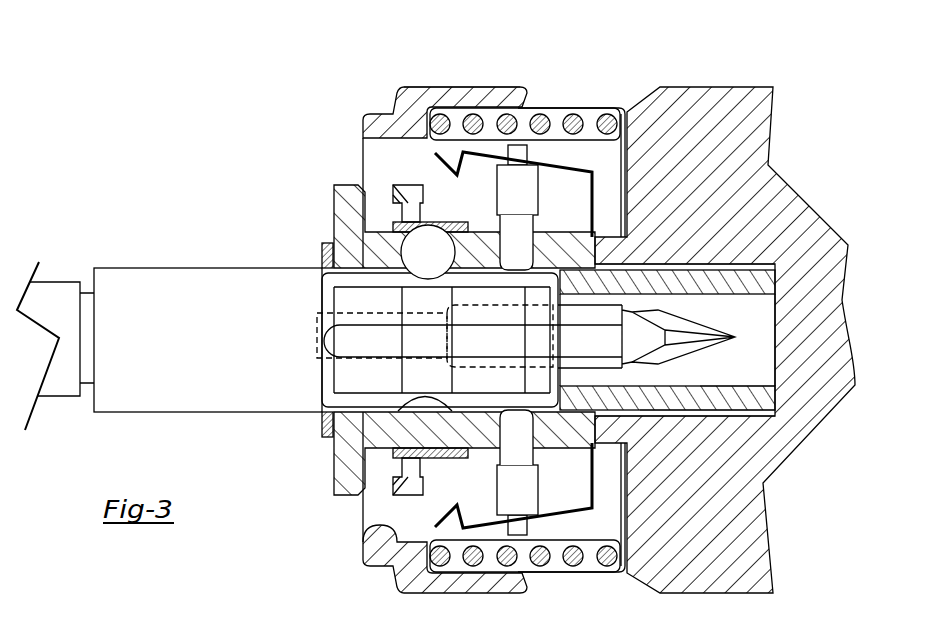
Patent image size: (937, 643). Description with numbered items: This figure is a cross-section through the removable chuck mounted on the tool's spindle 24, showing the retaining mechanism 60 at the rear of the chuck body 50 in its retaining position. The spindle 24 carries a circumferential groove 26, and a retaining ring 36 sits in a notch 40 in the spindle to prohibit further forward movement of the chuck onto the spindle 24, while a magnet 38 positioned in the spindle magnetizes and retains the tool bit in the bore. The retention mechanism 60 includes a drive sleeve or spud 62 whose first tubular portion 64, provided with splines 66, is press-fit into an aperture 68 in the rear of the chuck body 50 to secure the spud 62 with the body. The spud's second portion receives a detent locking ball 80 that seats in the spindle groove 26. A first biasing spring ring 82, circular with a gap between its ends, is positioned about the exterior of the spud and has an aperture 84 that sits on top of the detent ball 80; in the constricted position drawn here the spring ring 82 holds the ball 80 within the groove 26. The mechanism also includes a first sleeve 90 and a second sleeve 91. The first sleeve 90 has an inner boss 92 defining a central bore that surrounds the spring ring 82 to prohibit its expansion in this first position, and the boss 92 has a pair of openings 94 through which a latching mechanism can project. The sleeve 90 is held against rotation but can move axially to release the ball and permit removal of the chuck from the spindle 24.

The spindle 24 is at (160, 280).
The circumferential groove 26 is at (423, 398).
The retaining ring 36 is at (322, 248).
The magnet 38 is at (318, 335).
The notch 40 is at (324, 292).
The body 50 is at (727, 108).
The retaining mechanism 60 is at (435, 80).
The drive sleeve or spud 62 is at (753, 268).
The first tubular portion 64 is at (660, 410).
The splines 66 is at (705, 263).
The aperture 68 is at (745, 392).
The detent locking ball 80 is at (378, 244).
The first biasing spring ring 82 is at (403, 233).
The aperture 84 is at (427, 250).
The first sleeve 90 is at (483, 106).
The second sleeve 91 is at (598, 106).
The inner boss 92 is at (517, 140).
The openings 94 is at (368, 505).